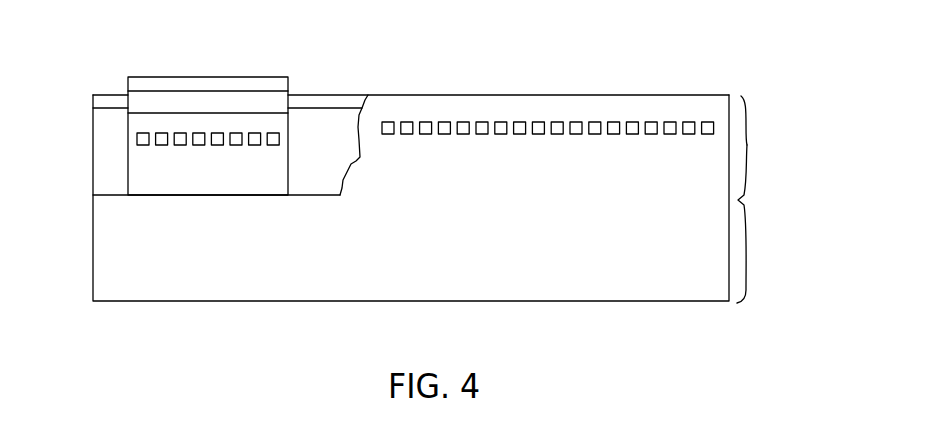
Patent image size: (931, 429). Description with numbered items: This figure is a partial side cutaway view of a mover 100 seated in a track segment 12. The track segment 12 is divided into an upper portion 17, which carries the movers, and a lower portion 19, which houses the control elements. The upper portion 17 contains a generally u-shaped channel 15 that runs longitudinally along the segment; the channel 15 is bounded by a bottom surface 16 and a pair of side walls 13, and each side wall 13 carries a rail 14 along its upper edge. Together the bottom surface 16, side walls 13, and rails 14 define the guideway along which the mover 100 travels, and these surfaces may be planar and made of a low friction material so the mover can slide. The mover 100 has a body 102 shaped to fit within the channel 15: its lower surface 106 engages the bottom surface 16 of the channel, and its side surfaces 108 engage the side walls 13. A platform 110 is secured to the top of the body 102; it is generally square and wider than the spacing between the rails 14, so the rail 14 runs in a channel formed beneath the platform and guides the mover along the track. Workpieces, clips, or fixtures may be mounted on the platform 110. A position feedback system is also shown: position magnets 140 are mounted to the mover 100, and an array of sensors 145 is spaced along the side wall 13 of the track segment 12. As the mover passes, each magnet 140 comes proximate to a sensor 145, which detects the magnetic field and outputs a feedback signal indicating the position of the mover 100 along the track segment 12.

The track segment 12 is at (700, 64).
The side wall 13 is at (333, 148).
The rail 14 is at (342, 95).
The channel 15 is at (100, 152).
The bottom surface 16 is at (318, 204).
The upper portion 17 is at (747, 145).
The lower portion 19 is at (747, 248).
The mover 100 is at (203, 78).
The body 102 is at (218, 177).
The lower surface 106 is at (172, 197).
The side surface 108 is at (202, 184).
The platform 110 is at (150, 83).
The position magnet 140 is at (274, 147).
The sensor 145 is at (576, 134).